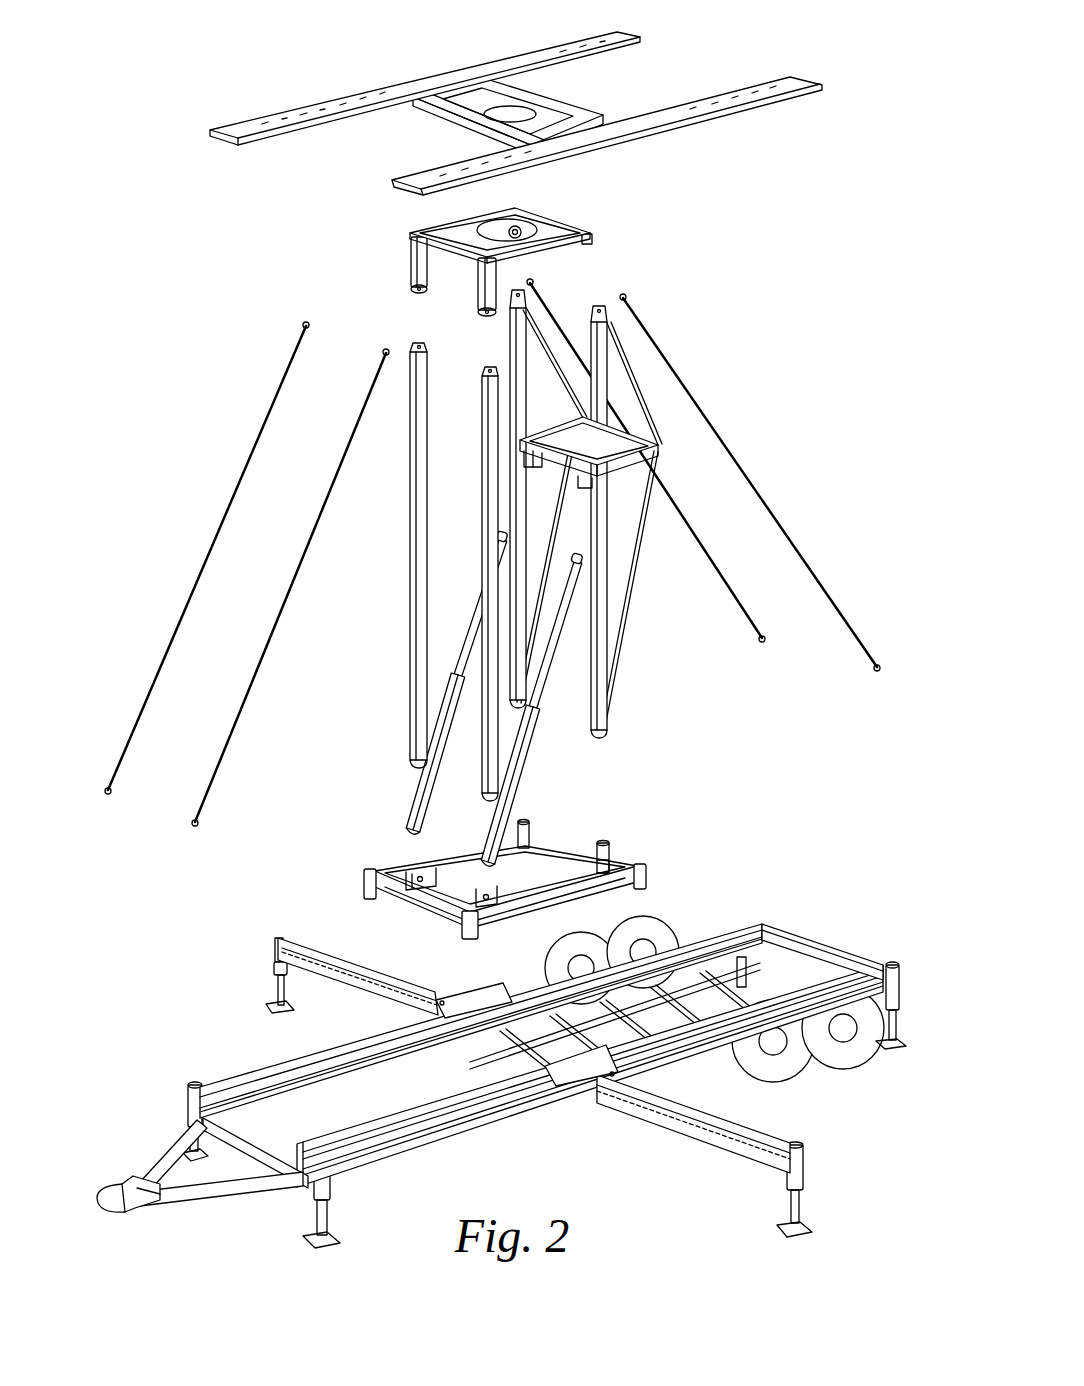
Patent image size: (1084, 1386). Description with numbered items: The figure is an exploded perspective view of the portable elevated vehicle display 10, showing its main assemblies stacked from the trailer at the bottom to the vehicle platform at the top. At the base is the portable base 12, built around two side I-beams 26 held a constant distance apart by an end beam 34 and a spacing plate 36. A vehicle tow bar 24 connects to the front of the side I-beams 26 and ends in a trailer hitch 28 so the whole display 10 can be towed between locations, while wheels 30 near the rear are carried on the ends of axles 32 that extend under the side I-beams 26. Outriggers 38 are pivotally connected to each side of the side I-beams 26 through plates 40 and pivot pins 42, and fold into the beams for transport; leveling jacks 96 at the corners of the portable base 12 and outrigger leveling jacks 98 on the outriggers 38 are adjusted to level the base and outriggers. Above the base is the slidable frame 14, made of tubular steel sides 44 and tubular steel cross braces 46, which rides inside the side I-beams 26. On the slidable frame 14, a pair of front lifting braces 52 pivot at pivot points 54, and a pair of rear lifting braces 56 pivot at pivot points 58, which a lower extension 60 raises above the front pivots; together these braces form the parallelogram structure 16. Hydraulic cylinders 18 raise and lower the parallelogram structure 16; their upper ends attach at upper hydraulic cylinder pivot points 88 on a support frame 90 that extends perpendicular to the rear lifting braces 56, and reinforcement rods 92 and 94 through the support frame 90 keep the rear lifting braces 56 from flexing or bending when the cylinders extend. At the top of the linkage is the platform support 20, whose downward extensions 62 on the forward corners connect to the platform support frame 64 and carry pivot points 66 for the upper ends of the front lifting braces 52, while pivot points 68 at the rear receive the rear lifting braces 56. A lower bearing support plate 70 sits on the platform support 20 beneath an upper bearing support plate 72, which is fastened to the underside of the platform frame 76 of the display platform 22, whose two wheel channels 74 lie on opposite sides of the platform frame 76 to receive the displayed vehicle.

The portable elevated vehicle display 10 is at (826, 210).
The portable base 12 is at (810, 927).
The slidable frame 14 is at (384, 857).
The parallelogram structure 16 is at (650, 612).
The hydraulic cylinders 18 is at (490, 840).
The platform support 20 is at (592, 212).
The display platform 22 is at (332, 82).
The vehicle tow bar 24 is at (168, 1157).
The side I-beams 26 is at (290, 1061).
The trailer hitch 28 is at (108, 1219).
The wheels 30 is at (632, 922).
The axles 32 is at (660, 1010).
The end beam 34 is at (823, 945).
The spacing plate 36 is at (258, 1147).
The outriggers 38 is at (326, 955).
The plates 40 is at (460, 1006).
The pivot pins 42 is at (441, 1001).
The tubular steel sides 44 is at (557, 896).
The tubular steel cross braces 46 is at (476, 896).
The front lifting braces 52 is at (427, 438).
The pivot points 54 is at (412, 887).
The rear lifting braces 56 is at (590, 380).
The pivot points 58 is at (528, 826).
The lower extension 60 is at (610, 864).
The downward extension 62 is at (411, 265).
The platform support frame 64 is at (555, 245).
The pivot point 66 is at (490, 317).
The pivot points 68 is at (590, 233).
The lower bearing support plate 70 is at (456, 228).
The upper bearing support plate 72 is at (546, 112).
The wheel channels 74 is at (288, 110).
The platform frame 76 is at (470, 112).
The upper hydraulic cylinder pivot points 88 is at (533, 468).
The support frame 90 is at (633, 425).
The reinforcement rod 92 is at (628, 363).
The reinforcement rod 94 is at (639, 550).
The leveling jacks 96 is at (748, 976).
The outrigger leveling jacks 98 is at (272, 962).